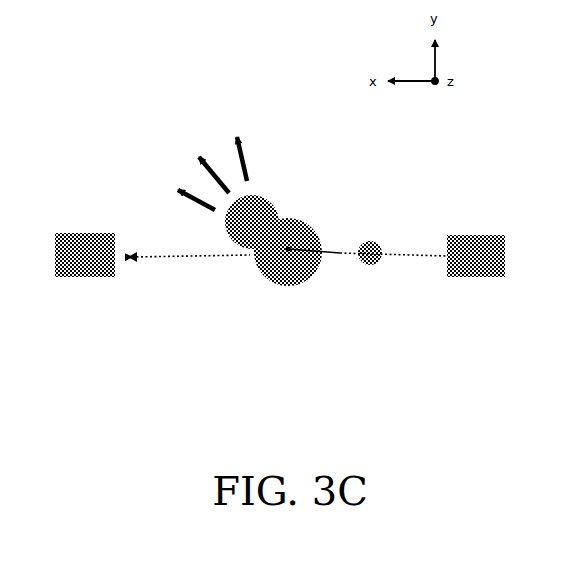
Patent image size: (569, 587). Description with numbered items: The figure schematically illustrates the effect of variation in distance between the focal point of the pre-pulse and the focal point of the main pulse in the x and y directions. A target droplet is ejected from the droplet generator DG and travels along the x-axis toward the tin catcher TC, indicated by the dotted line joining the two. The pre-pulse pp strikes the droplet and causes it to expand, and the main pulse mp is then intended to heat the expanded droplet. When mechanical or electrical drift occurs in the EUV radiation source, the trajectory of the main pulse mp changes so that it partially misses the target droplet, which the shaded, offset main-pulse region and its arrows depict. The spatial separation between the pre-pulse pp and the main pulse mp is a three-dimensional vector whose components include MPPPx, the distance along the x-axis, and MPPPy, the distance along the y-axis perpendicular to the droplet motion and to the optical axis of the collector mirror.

The tin catcher TC is at (85, 255).
The droplet generator DG is at (476, 256).
The main pulse mp is at (255, 211).
The pre-pulse pp is at (380, 263).
The MPPP separation in y-axis MPPPy is at (288, 249).
The MPPP separation in x-axis MPPPx is at (338, 252).